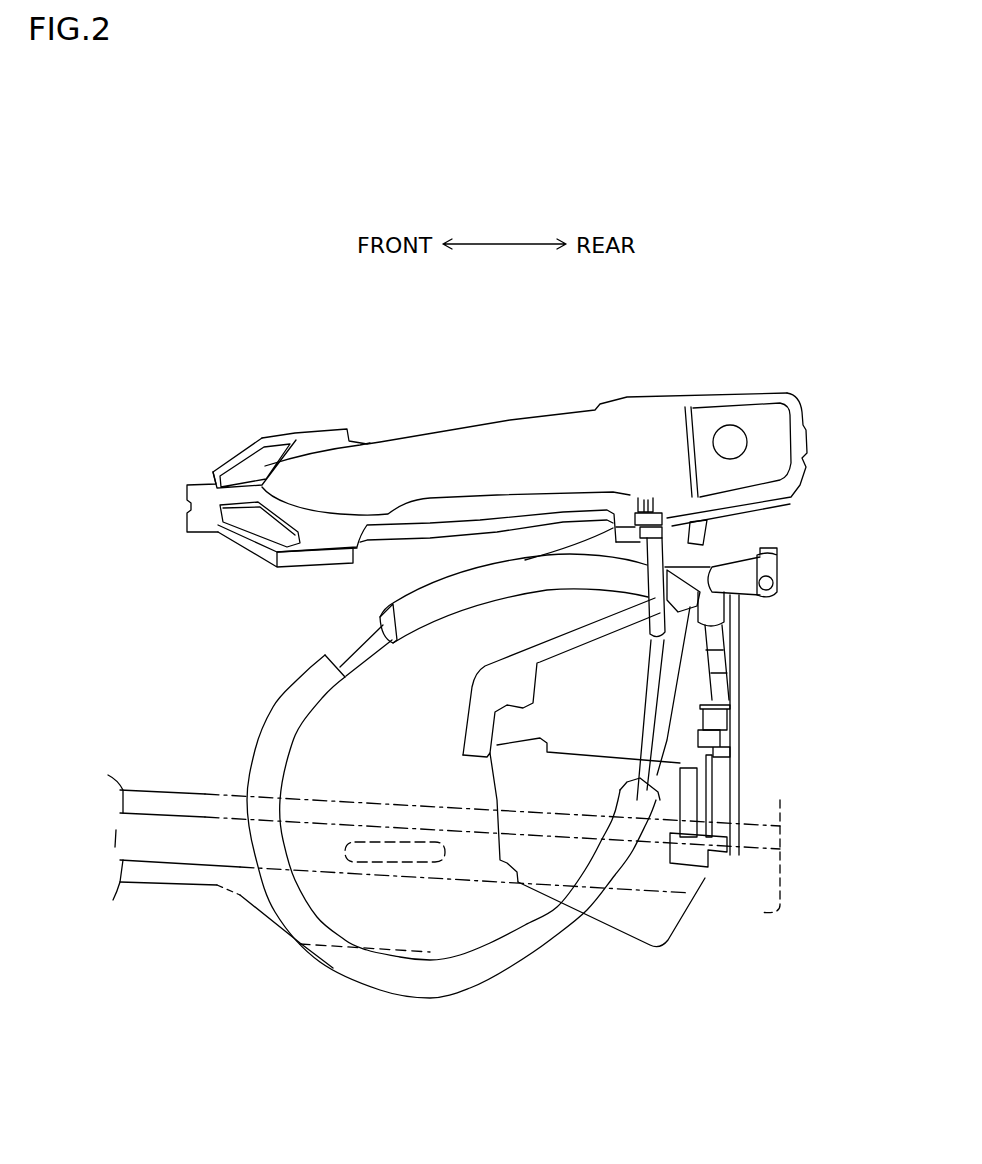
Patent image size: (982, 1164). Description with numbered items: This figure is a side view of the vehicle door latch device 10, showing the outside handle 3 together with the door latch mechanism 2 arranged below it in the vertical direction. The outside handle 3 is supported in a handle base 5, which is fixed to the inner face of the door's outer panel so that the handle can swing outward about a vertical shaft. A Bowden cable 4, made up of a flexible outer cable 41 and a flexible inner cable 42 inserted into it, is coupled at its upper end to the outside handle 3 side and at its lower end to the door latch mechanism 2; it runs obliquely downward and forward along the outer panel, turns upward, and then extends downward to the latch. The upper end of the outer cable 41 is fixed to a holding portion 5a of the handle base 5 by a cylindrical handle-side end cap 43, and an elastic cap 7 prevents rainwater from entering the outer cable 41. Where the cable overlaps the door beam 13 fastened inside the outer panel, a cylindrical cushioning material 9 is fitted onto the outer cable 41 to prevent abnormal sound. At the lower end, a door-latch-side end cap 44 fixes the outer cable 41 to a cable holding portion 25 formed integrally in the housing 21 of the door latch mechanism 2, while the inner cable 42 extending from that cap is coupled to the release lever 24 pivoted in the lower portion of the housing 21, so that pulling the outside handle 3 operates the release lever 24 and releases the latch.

The vehicle door latch device 10 is at (207, 360).
The outside handle 3 is at (514, 412).
The handle base 5 is at (790, 393).
The holding portion 5a is at (626, 548).
The elastic cap 7 is at (669, 511).
The handle-side end cap 43 is at (690, 552).
The door-latch-side end cap 44 is at (745, 656).
The door latch mechanism 2 is at (752, 682).
The Bowden cable 4 is at (676, 712).
The cable holding portion 25 is at (741, 747).
The outer cable 41 is at (715, 762).
The inner cable 42 is at (728, 799).
The release lever 24 is at (722, 838).
The housing 21 is at (670, 937).
The cushioning material 9 is at (410, 593).
The door beam 13 is at (160, 790).